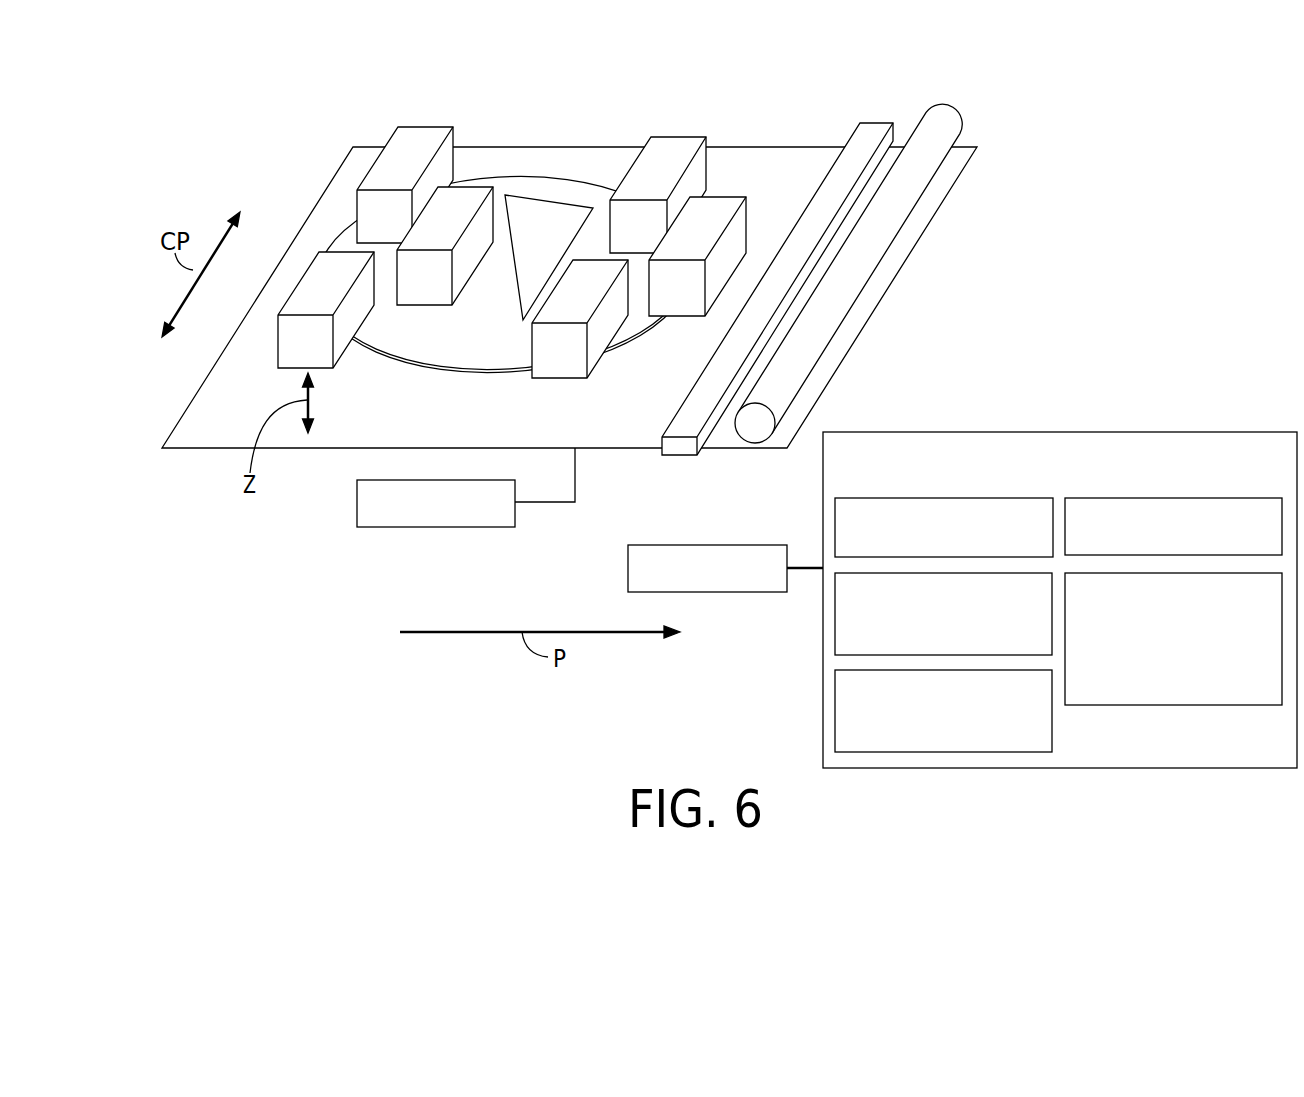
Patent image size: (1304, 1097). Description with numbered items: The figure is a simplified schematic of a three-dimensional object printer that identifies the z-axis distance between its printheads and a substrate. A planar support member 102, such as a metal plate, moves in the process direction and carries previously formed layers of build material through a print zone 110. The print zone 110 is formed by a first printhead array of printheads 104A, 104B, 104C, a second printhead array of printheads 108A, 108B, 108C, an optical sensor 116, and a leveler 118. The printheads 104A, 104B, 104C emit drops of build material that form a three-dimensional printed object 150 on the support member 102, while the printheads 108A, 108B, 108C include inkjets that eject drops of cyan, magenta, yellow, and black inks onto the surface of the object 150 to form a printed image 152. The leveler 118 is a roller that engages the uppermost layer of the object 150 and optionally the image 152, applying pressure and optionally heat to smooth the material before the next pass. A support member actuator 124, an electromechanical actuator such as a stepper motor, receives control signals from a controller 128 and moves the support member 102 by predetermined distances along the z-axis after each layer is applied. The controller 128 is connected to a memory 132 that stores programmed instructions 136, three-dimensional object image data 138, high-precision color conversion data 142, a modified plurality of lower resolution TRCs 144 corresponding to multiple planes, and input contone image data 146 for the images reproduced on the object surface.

The support member 102 is at (805, 147).
The printhead 104A is at (413, 127).
The printhead 104B is at (438, 293).
The printhead 104C is at (343, 252).
The printhead 108A is at (662, 137).
The printhead 108B is at (715, 202).
The printhead 108C is at (573, 373).
The print zone 110 is at (560, 70).
The optical sensor 116 is at (877, 122).
The leveler 118 is at (957, 102).
The support member actuator 124 is at (355, 501).
The controller 128 is at (708, 545).
The memory 132 is at (1060, 432).
The programmed instructions 136 is at (940, 498).
The three-dimensional object image data 138 is at (1173, 498).
The high-precision color conversion data 142 is at (835, 625).
The lower resolution TRCs 144 is at (835, 712).
The input contone image data 146 is at (1163, 705).
The object 150 is at (470, 372).
The printed image 152 is at (538, 199).